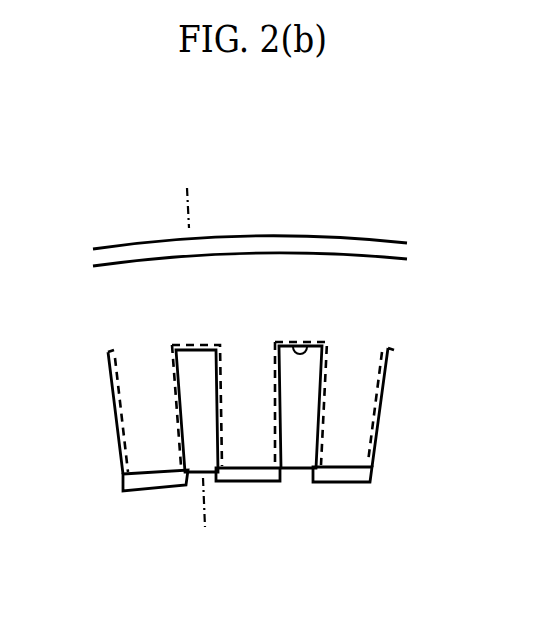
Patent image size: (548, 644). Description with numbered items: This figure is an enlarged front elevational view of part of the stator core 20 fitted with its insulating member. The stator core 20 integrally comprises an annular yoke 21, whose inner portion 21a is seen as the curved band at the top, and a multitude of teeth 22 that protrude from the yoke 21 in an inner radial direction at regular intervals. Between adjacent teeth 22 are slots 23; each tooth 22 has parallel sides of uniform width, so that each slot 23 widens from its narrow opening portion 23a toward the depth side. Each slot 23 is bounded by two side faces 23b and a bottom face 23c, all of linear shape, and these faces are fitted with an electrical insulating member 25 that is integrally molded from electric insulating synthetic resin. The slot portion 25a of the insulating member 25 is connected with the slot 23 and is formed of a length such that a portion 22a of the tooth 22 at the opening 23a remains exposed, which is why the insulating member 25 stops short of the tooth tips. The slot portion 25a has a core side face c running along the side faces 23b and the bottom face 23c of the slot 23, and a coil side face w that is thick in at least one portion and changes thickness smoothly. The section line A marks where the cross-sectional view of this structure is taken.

The stator core 20 is at (345, 185).
The annular yoke 21 is at (377, 265).
The yoke inner surface 21a is at (118, 249).
The tooth 22 is at (358, 478).
The portion of the tooth 22a is at (157, 482).
The slot 23 is at (197, 363).
The opening portion 23a is at (208, 472).
The side face of the slot 23b is at (310, 433).
The bottom face of the slot 23c is at (307, 345).
The electrical insulating member 25 is at (250, 287).
The slot portion 25a is at (383, 399).
The section line A- A is at (196, 359).
The coil side face w is at (318, 385).
The core side face c is at (312, 373).